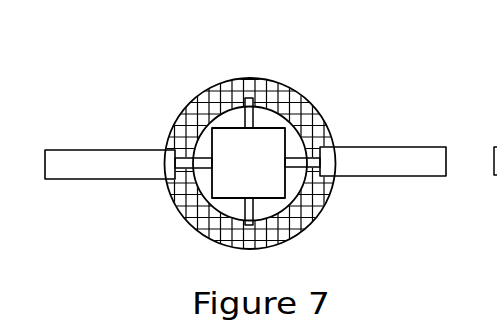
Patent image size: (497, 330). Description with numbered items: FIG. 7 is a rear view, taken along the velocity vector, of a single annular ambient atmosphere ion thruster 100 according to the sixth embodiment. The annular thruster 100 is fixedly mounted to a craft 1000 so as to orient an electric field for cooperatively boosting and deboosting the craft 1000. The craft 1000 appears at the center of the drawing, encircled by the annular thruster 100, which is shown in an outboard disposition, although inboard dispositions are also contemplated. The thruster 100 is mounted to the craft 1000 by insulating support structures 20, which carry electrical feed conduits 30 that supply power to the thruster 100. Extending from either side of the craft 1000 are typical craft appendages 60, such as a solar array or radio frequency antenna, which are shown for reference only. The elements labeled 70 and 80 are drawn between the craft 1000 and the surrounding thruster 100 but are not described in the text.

The annular ambient atmosphere ion thruster 100 is at (245, 161).
The insulating support structure 20 is at (333, 78).
The electrical feed 30 is at (355, 223).
The craft appendages 60 is at (110, 175).
The vertical connector 70 is at (190, 146).
The horizontal connector 80 is at (185, 180).
The craft 1000 is at (270, 176).